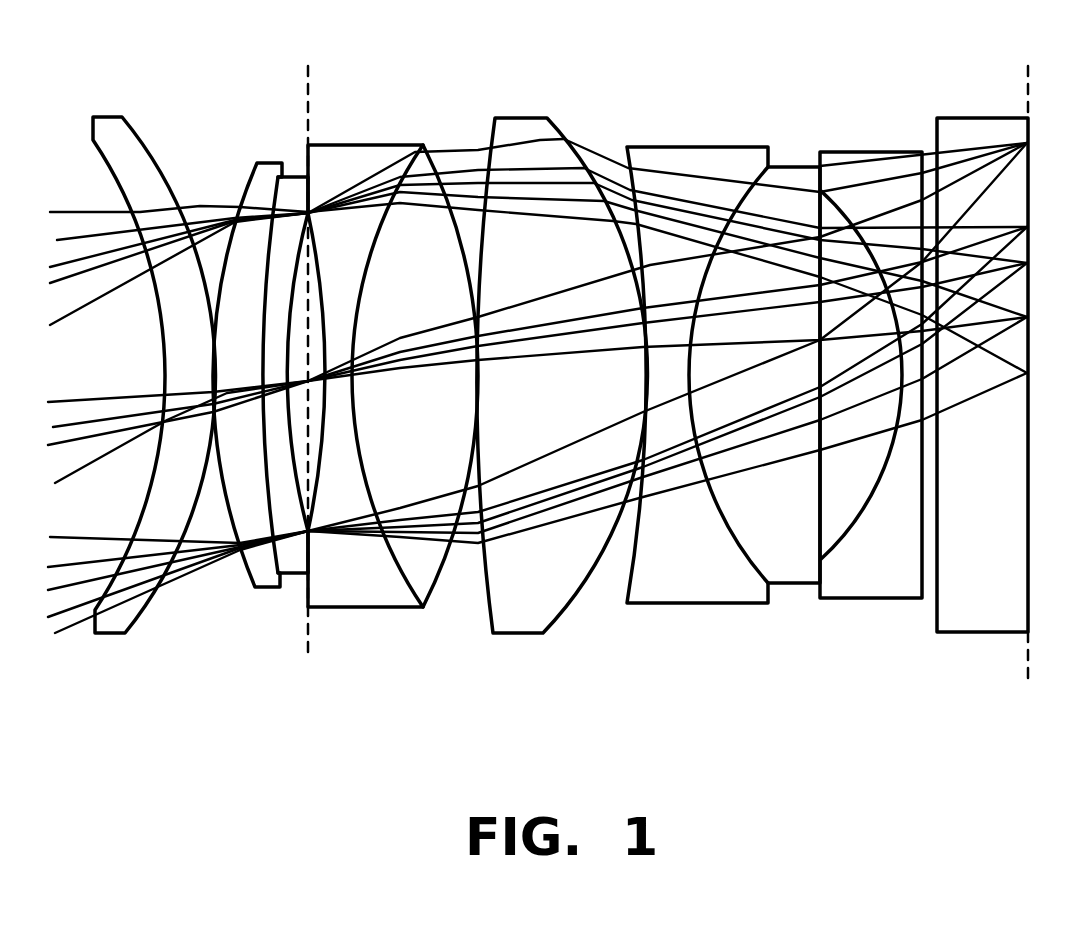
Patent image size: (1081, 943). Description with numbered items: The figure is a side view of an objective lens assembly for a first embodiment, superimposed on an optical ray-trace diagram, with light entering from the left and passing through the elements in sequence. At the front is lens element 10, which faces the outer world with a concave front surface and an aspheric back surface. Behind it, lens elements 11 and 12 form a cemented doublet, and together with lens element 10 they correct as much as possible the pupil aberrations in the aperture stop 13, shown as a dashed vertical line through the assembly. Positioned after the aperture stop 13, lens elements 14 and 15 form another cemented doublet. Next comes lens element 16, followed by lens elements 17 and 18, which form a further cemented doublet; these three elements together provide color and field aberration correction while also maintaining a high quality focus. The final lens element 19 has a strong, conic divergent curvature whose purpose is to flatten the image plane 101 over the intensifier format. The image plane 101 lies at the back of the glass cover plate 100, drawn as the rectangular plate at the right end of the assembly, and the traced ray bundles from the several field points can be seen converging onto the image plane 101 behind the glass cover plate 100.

The lens element 10 is at (113, 632).
The lens element 11 is at (260, 589).
The lens element 12 is at (293, 577).
The aperture stop 13 is at (308, 48).
The lens element 14 is at (367, 604).
The lens element 15 is at (427, 582).
The lens element 16 is at (523, 634).
The lens element 17 is at (690, 603).
The lens element 18 is at (793, 584).
The lens element 19 is at (867, 600).
The glass cover plate 100 is at (975, 633).
The image plane 101 is at (1028, 56).